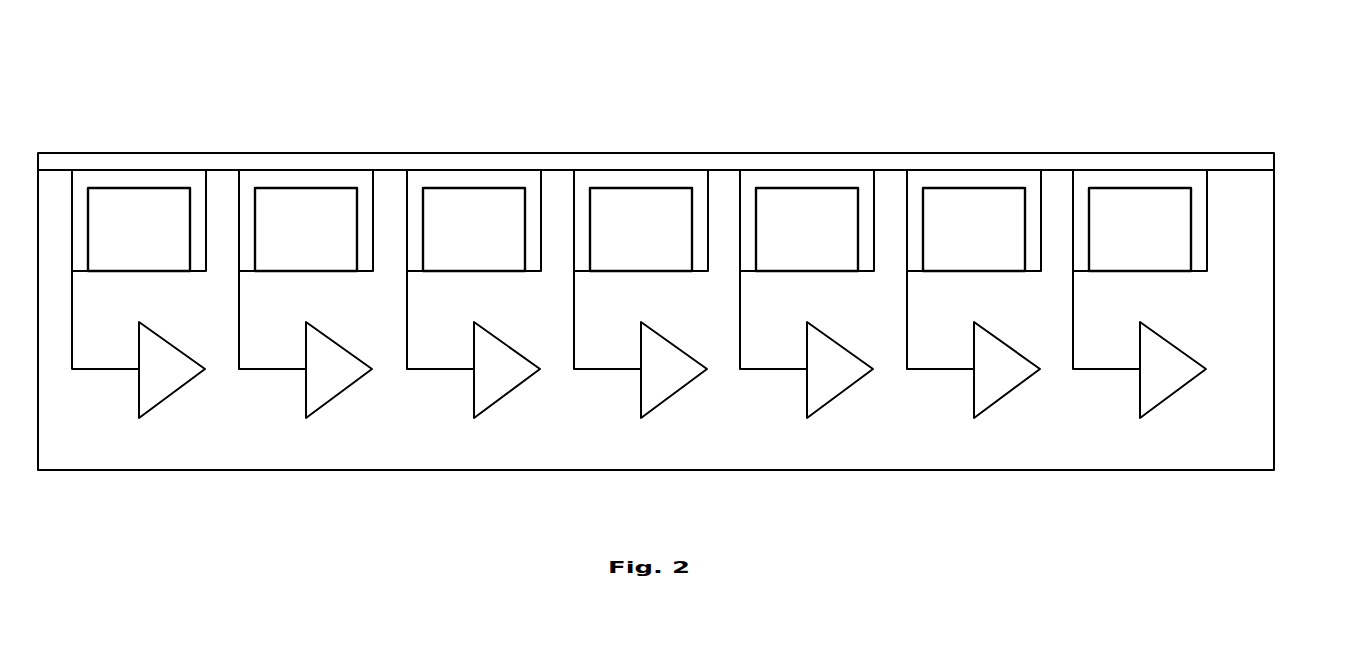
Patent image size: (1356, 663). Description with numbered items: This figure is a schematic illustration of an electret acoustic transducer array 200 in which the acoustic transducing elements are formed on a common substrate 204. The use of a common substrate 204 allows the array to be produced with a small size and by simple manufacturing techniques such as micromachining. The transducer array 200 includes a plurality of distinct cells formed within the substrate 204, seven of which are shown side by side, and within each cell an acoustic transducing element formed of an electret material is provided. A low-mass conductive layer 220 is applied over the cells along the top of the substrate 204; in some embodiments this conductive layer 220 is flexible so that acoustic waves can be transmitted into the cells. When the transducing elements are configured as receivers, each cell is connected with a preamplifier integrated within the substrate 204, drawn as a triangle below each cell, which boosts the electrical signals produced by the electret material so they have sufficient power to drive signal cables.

The transducer array 200 is at (1110, 66).
The substrate 204 is at (1274, 350).
The conductive layer 220 is at (1265, 162).